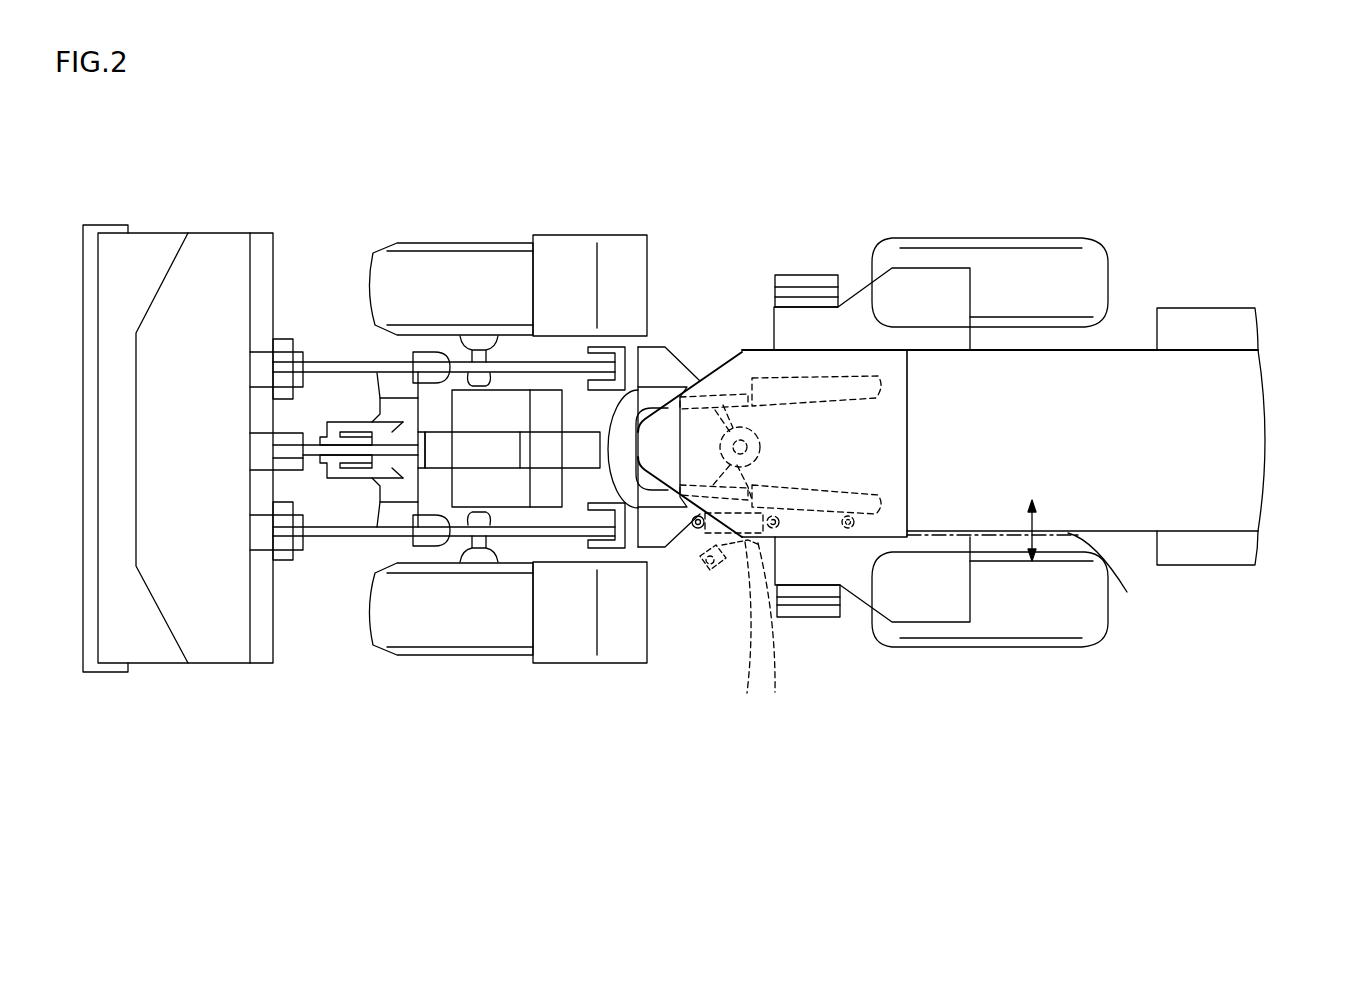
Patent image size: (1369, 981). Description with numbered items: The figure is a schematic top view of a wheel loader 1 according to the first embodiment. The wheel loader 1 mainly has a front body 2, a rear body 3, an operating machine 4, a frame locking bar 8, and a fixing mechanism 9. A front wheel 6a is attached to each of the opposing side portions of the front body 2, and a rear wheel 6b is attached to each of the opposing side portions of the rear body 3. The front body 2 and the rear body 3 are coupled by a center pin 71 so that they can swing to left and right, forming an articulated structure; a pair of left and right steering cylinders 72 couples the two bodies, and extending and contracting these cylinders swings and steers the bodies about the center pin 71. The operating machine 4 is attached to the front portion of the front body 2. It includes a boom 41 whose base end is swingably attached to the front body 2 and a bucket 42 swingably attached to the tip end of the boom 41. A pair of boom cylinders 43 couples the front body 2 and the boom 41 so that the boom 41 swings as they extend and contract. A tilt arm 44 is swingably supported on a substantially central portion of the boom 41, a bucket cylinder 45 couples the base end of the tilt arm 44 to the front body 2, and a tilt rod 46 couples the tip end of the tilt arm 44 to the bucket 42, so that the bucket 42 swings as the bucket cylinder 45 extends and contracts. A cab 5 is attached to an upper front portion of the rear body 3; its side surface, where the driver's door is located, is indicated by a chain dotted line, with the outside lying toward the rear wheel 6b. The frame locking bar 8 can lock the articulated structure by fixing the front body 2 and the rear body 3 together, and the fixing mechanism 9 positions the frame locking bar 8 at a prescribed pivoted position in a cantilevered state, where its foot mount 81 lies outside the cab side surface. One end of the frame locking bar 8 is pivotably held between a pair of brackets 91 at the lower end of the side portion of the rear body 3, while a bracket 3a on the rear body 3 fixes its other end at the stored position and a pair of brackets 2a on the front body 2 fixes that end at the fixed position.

The wheel loader 1 is at (878, 137).
The front body 2 is at (660, 535).
The brackets 2a is at (693, 528).
The rear body 3 is at (940, 492).
The bracket 3a is at (856, 528).
The operating machine 4 is at (372, 177).
The cab 5 is at (740, 350).
The front wheel 6a is at (430, 271).
The rear wheel 6b is at (1020, 263).
The frame locking bar 8 is at (720, 540).
The fixing mechanism 9 is at (790, 565).
The boom 41 is at (330, 362).
The bucket 42 is at (157, 280).
The boom cylinders 43 is at (515, 540).
The tilt arm 44 is at (353, 473).
The bucket cylinder 45 is at (485, 432).
The tilt rod 46 is at (311, 452).
The center pin 71 is at (740, 447).
The steering cylinders 72 is at (842, 493).
The foot mount 81 is at (745, 632).
The brackets 91 is at (782, 528).